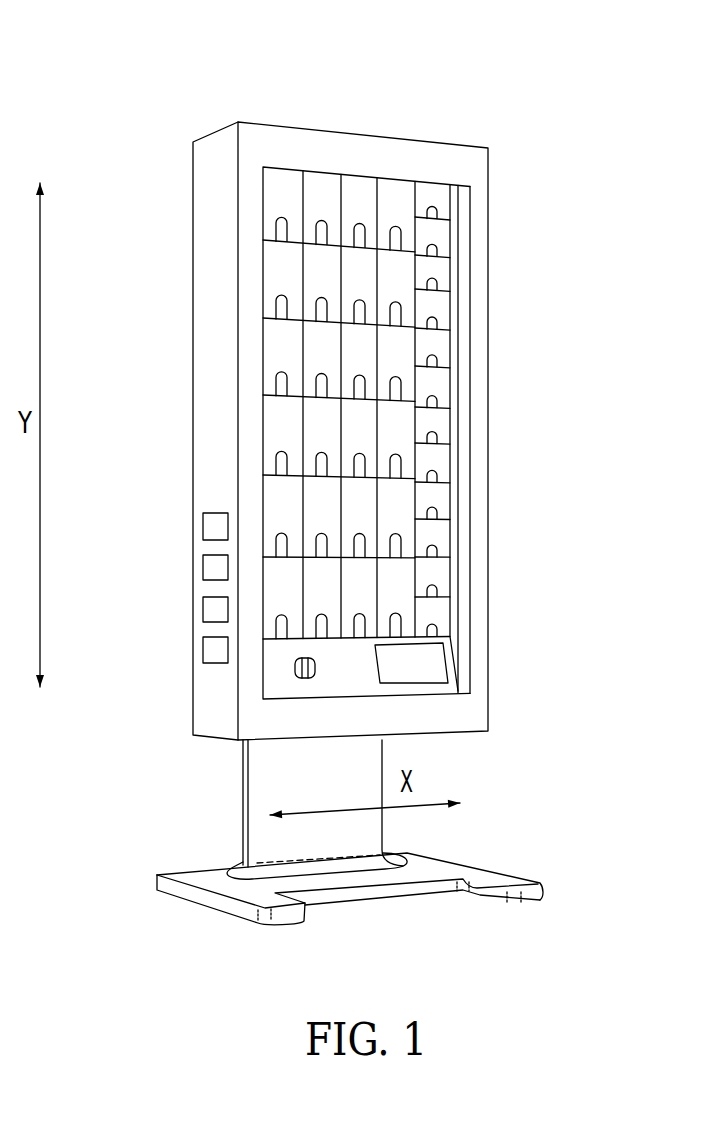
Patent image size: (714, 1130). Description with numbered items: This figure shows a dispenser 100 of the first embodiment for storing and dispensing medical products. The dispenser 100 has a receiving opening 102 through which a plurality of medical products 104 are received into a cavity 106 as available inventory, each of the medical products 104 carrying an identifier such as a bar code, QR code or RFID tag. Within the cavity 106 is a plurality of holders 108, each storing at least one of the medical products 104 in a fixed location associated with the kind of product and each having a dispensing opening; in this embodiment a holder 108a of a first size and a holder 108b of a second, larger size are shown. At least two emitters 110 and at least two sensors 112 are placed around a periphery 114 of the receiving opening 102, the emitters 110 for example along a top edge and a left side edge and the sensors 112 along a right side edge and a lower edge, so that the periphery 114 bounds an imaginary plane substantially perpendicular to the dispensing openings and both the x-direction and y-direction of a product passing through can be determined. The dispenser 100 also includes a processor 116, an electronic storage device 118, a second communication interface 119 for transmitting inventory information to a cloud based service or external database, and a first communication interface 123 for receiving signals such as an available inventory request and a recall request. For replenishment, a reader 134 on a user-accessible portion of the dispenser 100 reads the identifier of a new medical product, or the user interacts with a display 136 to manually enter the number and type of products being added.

The dispenser 100 is at (98, 77).
The receiving opening 102 is at (244, 278).
The medical products 104 is at (393, 227).
The cavity 106 is at (285, 153).
The holders 108 is at (620, 220).
The holder of a first size 108a is at (400, 277).
The holder of a second, larger size 108b is at (437, 312).
The emitters 110 is at (337, 156).
The sensors 112 is at (469, 521).
The periphery 114 is at (253, 697).
The processor 116 is at (212, 525).
The electronic storage device 118 is at (212, 567).
The second communication interface 119 is at (212, 608).
The first communication interface 123 is at (212, 650).
The reader 134 is at (295, 668).
The display 136 is at (427, 662).